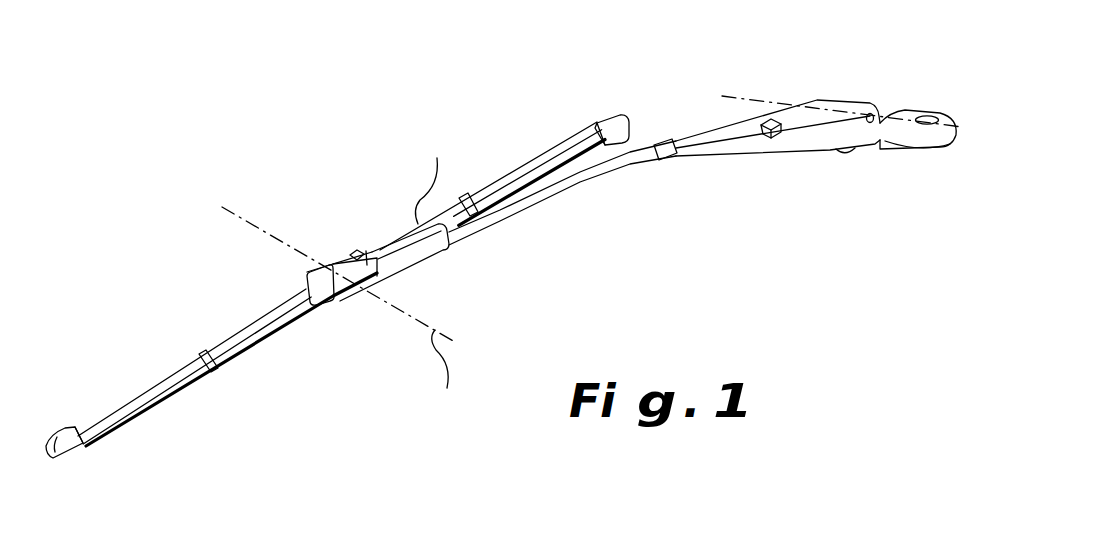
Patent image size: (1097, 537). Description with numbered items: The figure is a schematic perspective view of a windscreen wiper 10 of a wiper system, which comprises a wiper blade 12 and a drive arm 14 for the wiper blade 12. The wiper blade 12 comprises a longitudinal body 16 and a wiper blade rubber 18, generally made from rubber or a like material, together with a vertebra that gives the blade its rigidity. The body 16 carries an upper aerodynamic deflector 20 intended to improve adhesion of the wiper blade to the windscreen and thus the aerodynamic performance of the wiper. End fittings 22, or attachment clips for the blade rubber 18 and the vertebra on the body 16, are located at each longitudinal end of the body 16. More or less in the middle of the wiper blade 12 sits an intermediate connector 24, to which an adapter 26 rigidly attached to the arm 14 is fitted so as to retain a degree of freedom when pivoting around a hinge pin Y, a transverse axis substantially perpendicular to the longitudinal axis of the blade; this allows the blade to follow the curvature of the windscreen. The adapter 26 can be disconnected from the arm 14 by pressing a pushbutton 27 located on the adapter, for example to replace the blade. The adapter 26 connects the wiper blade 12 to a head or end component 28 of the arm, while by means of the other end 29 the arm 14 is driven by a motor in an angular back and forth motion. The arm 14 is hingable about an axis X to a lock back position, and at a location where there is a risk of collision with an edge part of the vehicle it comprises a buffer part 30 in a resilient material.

The windscreen wiper 10 is at (402, 108).
The wiper blade 12 is at (121, 399).
The drive arm 14 is at (643, 170).
The longitudinal body 16 is at (158, 384).
The wiper blade rubber 18 is at (180, 402).
The upper aerodynamic deflector 20 is at (245, 335).
The end fittings 22 is at (62, 431).
The intermediate connector 24 is at (352, 294).
The adapter 26 is at (310, 288).
The pushbutton 27 is at (357, 249).
The head or end component 28 is at (333, 262).
The other end 29 is at (872, 123).
The buffer part 30 is at (774, 133).